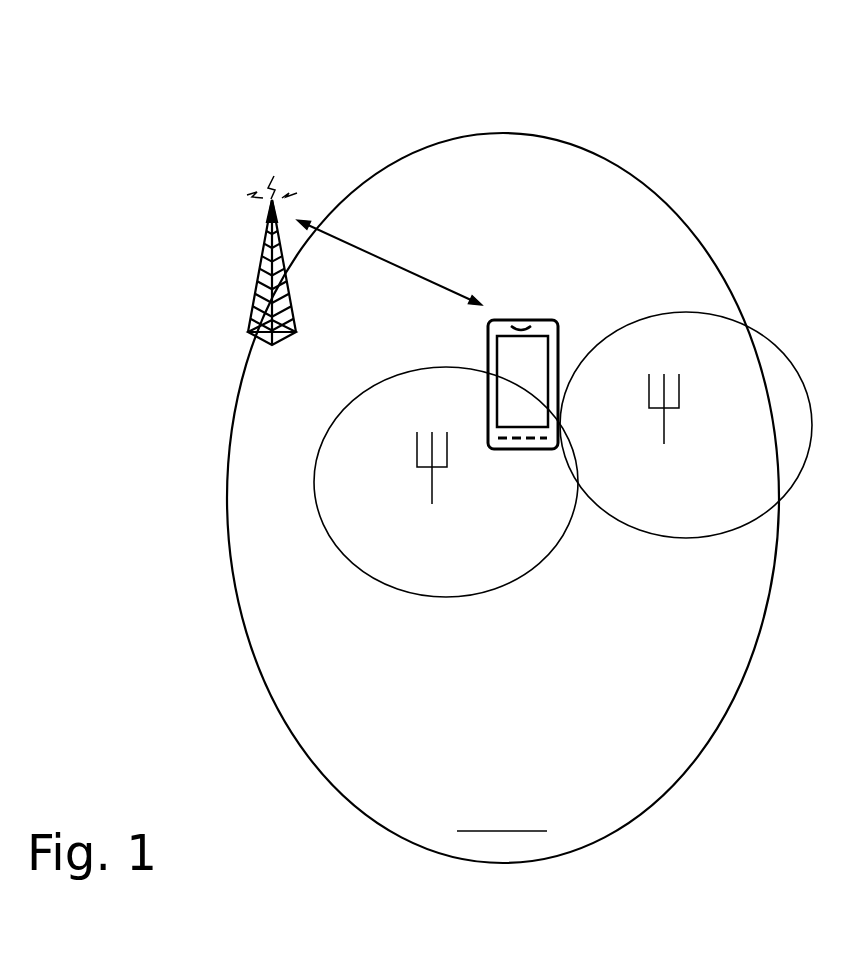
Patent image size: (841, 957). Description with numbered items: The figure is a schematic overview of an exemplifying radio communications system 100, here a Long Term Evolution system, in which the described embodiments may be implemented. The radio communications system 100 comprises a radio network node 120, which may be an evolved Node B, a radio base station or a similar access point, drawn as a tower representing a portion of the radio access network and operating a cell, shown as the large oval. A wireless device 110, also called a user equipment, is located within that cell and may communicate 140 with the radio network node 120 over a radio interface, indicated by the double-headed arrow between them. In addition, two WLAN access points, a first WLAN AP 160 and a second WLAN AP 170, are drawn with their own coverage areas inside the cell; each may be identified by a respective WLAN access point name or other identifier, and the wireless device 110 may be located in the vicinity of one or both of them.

The radio communications system 100 is at (330, 125).
The wireless device 110 is at (523, 384).
The radio network node 120 is at (291, 282).
The communication 140 is at (389, 262).
The WLAN access point 160 is at (446, 482).
The WLAN access point 170 is at (686, 425).